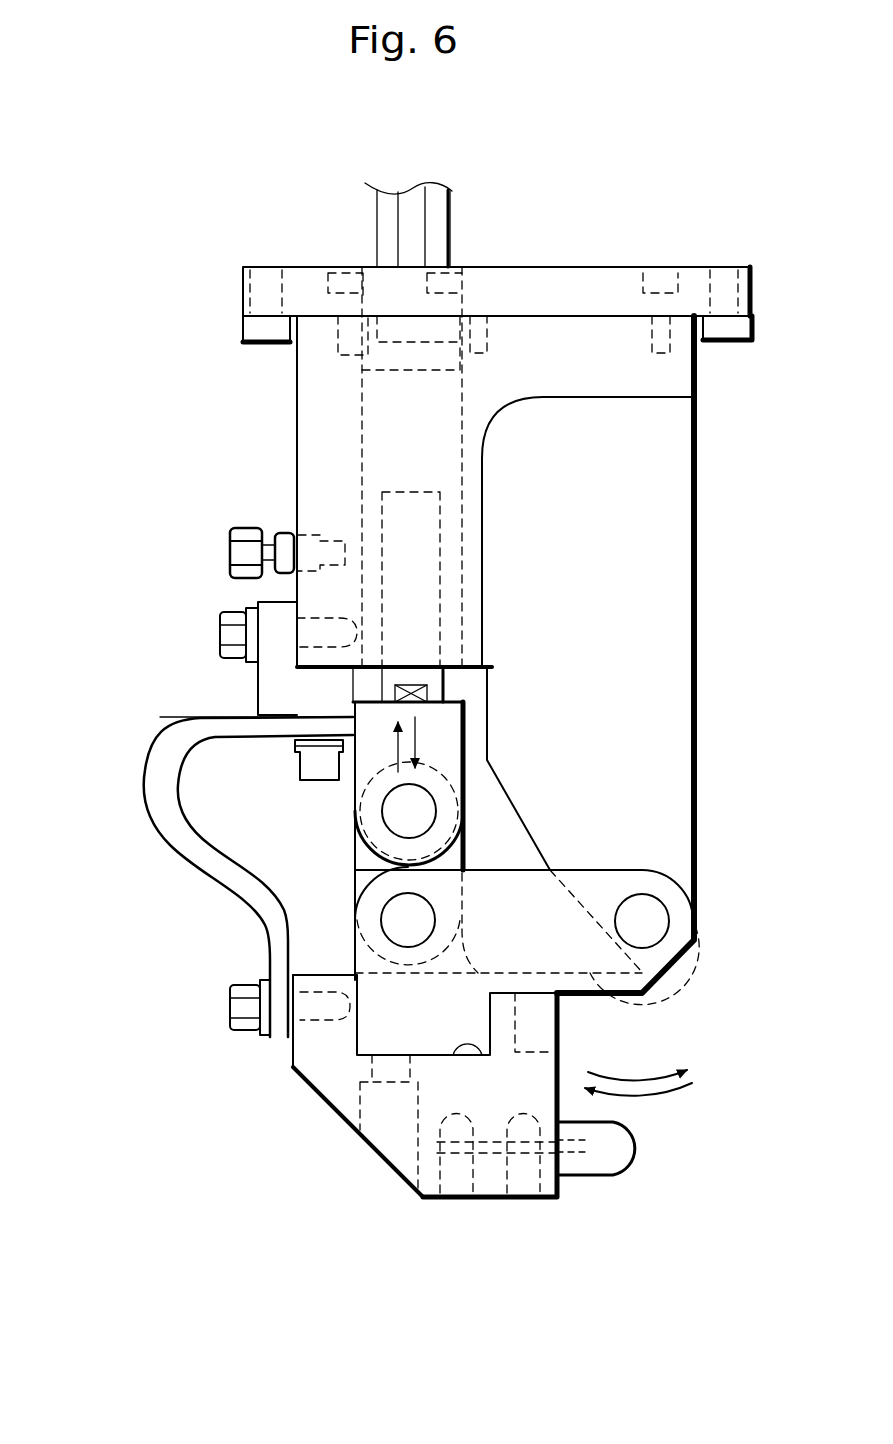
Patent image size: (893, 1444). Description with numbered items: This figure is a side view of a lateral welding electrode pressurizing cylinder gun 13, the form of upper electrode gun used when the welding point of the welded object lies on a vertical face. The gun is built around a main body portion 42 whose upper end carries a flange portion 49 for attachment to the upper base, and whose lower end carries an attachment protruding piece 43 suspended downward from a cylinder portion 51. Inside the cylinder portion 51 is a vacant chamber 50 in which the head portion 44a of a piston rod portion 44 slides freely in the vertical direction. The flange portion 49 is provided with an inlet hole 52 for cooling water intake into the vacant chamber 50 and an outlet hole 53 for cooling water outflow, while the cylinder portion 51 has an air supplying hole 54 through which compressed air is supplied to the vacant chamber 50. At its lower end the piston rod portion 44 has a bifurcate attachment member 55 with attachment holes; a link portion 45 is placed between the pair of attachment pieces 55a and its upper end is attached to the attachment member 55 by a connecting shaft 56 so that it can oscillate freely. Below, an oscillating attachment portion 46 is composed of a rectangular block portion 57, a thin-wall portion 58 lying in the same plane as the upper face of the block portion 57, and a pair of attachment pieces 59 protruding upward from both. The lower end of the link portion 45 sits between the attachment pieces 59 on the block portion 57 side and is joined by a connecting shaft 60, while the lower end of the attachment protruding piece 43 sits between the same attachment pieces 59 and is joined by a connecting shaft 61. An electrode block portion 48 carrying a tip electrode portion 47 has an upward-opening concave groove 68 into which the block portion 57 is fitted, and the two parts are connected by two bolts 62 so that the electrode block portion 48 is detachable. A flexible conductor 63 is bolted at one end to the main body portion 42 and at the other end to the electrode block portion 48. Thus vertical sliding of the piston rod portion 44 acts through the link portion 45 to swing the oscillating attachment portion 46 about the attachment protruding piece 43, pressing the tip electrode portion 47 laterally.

The lateral welding electrode pressurizing cylinder gun 13 is at (147, 257).
The main body portion 42 is at (295, 430).
The attachment protruding piece 43 is at (653, 813).
The piston rod portion 44 is at (443, 618).
The head portion 44a is at (360, 455).
The link portion 45 is at (350, 862).
The oscillating attachment portion 46 is at (346, 1042).
The tip electrode portion 47 is at (607, 1175).
The electrode block portion 48 is at (403, 1182).
The flange portion 49 is at (575, 276).
The vacant chamber 50 is at (385, 357).
The cylinder portion 51 is at (493, 395).
The inlet hole 52 is at (367, 292).
The outlet hole 53 is at (455, 268).
The air supplying hole 54 is at (305, 547).
The bifurcate attachment member 55 is at (448, 727).
The attachment pieces 55a is at (450, 800).
The connecting shaft 56 is at (393, 803).
The block portion 57 is at (423, 1045).
The thin-wall portion 58 is at (617, 997).
The attachment pieces 59 is at (665, 887).
The connecting shaft 60 is at (400, 920).
The connecting shaft 61 is at (642, 921).
The bolts 62 is at (468, 973).
The flexible conductor 63 is at (153, 790).
The concave groove 68 is at (482, 1057).